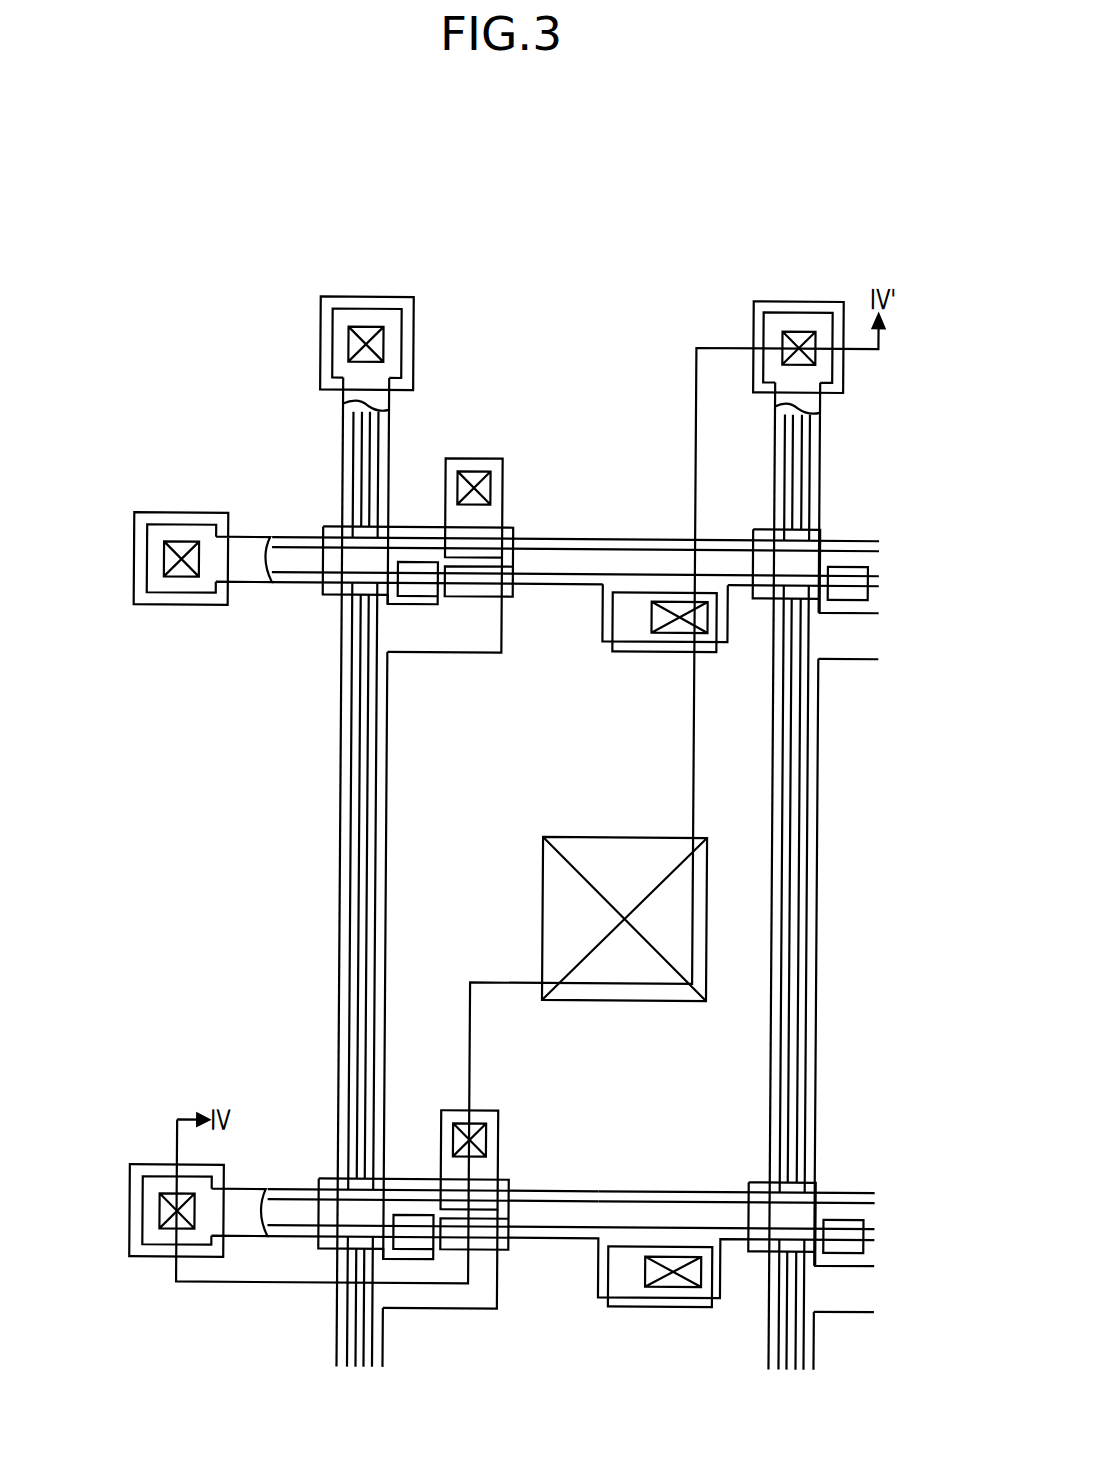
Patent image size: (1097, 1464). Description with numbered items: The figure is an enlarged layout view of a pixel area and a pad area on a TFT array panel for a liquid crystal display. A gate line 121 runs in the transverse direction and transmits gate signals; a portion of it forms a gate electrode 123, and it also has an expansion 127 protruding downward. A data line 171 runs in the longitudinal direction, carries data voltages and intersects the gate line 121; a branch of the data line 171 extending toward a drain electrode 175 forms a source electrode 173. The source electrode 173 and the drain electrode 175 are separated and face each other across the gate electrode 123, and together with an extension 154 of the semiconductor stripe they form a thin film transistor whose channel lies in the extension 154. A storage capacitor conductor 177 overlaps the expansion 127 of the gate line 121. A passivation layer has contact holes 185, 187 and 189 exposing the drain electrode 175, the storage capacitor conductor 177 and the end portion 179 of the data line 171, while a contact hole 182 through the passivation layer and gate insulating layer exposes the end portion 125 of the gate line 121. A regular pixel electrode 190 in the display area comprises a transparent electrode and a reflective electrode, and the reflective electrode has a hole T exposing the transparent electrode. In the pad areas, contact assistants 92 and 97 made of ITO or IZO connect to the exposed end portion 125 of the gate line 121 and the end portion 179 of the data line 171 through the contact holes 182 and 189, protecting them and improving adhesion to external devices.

The contact assistant 92 is at (131, 1199).
The contact assistant 97 is at (850, 388).
The gate line 121 is at (602, 539).
The gate electrode 123 is at (490, 1216).
The end portion of gate line 125 is at (155, 1249).
The expansion 127 is at (655, 651).
The extension 154 is at (524, 1153).
The data line 171 is at (340, 790).
The source electrode 173 is at (445, 1302).
The drain electrode 175 is at (456, 1122).
The storage capacitor conductor 177 is at (612, 641).
The end portion of data line 179 is at (831, 320).
The contact hole 182 is at (164, 1197).
The contact hole 185 is at (484, 1122).
The contact hole 187 is at (677, 603).
The contact hole 189 is at (796, 333).
The regular pixel electrode 190 is at (664, 1203).
The hole T is at (584, 834).